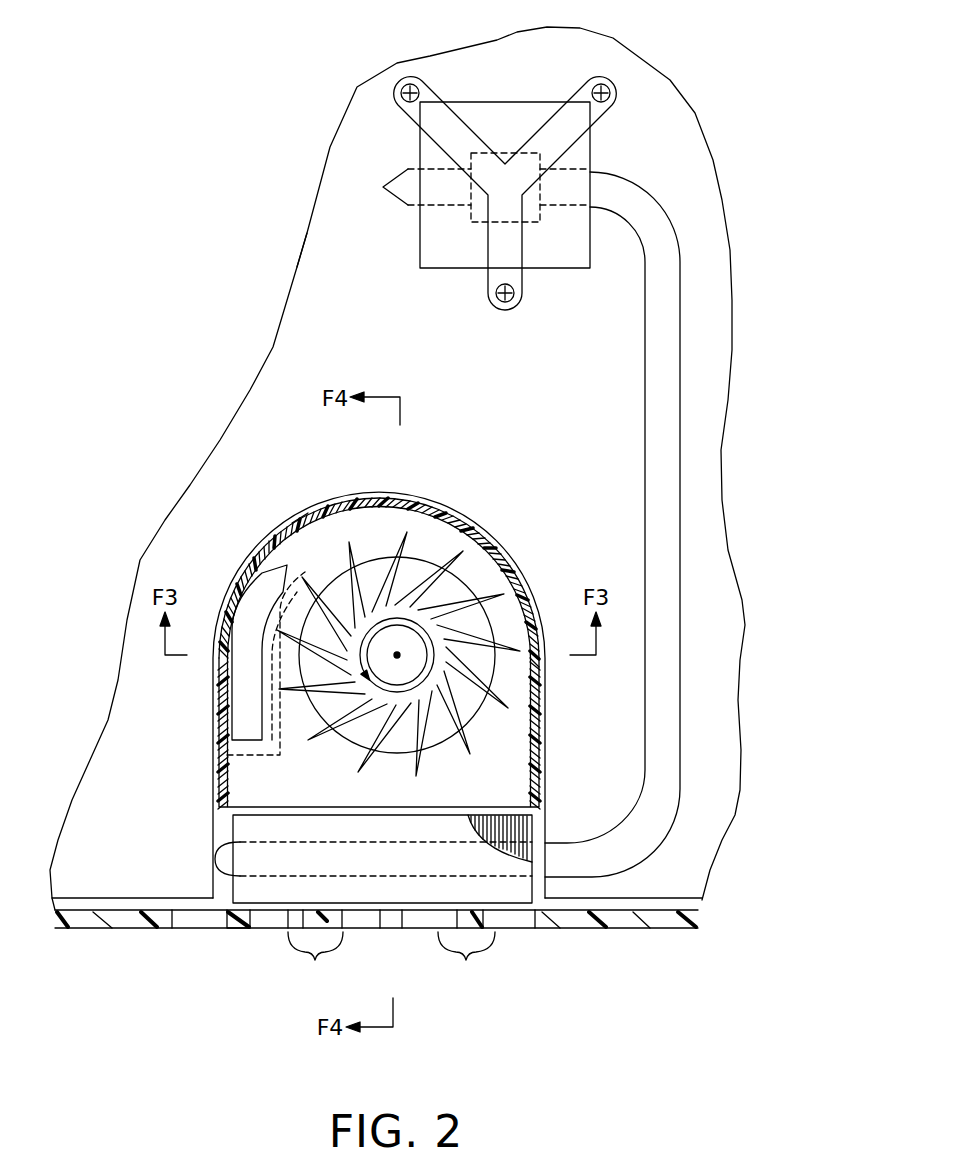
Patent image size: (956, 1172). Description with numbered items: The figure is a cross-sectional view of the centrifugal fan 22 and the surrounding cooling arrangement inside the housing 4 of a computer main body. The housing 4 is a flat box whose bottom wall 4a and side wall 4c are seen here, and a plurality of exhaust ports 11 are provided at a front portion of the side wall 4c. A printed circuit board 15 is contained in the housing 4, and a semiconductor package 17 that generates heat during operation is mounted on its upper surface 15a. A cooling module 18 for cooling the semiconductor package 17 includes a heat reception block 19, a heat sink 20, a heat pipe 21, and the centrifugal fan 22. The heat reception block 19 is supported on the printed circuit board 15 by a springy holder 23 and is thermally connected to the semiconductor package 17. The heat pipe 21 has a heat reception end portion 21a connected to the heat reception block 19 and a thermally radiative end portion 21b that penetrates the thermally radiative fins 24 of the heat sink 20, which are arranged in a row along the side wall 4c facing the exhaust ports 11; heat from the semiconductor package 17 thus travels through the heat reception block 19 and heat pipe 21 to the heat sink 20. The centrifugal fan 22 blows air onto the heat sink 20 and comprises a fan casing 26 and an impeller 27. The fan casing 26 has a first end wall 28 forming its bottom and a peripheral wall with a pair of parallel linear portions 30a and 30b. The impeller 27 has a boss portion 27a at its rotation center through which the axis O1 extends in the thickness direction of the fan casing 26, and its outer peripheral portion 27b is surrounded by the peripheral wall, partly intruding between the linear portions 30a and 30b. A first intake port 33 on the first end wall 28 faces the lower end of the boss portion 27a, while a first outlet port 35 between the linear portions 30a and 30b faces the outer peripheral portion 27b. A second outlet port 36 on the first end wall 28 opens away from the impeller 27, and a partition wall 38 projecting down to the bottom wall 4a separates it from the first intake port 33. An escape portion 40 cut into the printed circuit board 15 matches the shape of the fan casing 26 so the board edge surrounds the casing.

The housing 4 is at (582, 930).
The bottom wall 4a is at (220, 890).
The side wall 4c is at (666, 928).
The exhaust ports 11 is at (391, 961).
The printed circuit board 15 is at (85, 887).
The upper surface 15a is at (316, 265).
The semiconductor package 17 is at (477, 208).
The cooling module 18 is at (698, 287).
The heat reception block 19 is at (567, 255).
The heat sink 20 is at (250, 832).
The heat pipe 21 is at (663, 505).
The heat reception end portion 21a is at (437, 200).
The thermally radiative end portion 21b is at (280, 865).
The centrifugal fan 22 is at (455, 523).
The springy holder 23 is at (552, 132).
The thermally radiative fins 24 is at (528, 855).
The fan casing 26 is at (300, 525).
The impeller 27 is at (458, 600).
The boss portion 27a is at (385, 668).
The outer peripheral portion 27b is at (407, 530).
The first end wall 28 is at (515, 752).
The linear portion 30a is at (225, 728).
The linear portion 30b is at (540, 702).
The first intake port 33 is at (458, 725).
The first outlet port 35 is at (398, 790).
The second outlet port 36 is at (258, 598).
The partition wall 38 is at (262, 672).
The escape portion 40 is at (348, 505).
The axis O1 is at (400, 655).